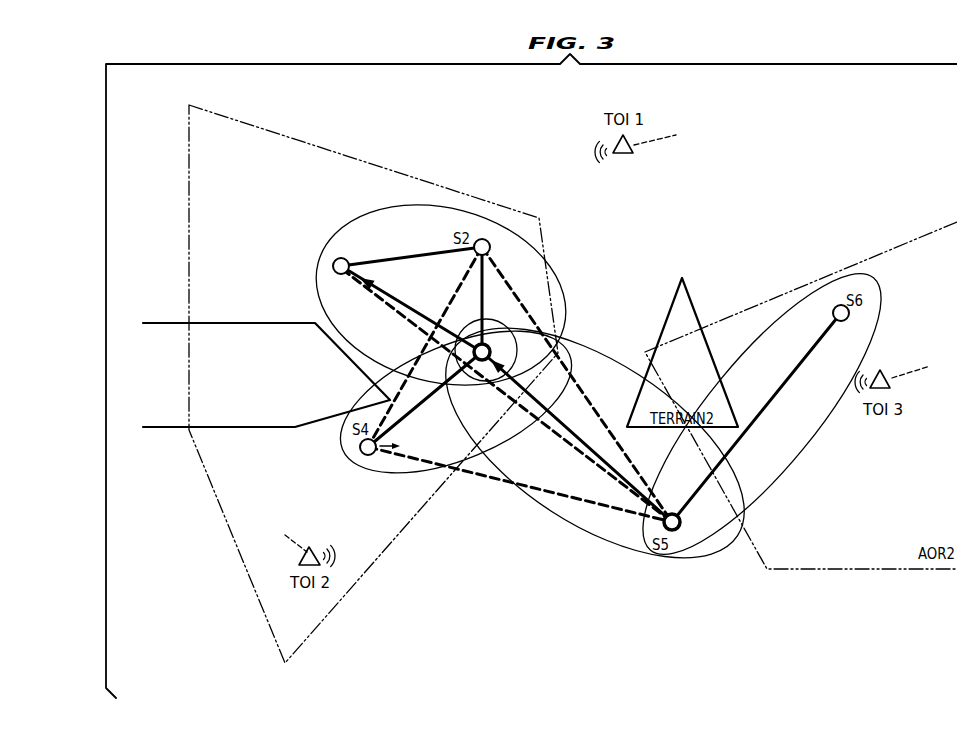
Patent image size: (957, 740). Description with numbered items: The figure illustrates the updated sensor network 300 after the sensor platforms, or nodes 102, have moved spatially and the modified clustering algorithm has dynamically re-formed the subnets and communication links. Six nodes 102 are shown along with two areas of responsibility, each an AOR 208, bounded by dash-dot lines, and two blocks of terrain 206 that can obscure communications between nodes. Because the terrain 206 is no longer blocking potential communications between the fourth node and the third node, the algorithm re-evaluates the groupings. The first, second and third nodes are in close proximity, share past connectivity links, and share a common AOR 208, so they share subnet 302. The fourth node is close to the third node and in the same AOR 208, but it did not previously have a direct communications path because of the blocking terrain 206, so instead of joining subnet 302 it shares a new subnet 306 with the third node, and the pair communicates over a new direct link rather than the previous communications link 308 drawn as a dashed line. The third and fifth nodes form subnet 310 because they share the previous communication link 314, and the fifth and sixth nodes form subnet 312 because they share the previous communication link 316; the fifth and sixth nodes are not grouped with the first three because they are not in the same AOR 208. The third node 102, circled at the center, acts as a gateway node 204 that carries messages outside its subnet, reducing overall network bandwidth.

The updated sensor network 300 is at (777, 128).
The Area of Responsibility (AOR) 208 is at (258, 126).
The terrain 206 is at (212, 322).
The subnet 302 is at (404, 207).
The new subnet 306 is at (339, 456).
The subnet 310 is at (624, 546).
The subnet 312 is at (797, 452).
The node 102 is at (333, 259).
The gateway node 204 is at (500, 323).
The previous communications link 308 is at (490, 487).
The previous communication link 314 is at (568, 423).
The previous communication link 316 is at (781, 397).